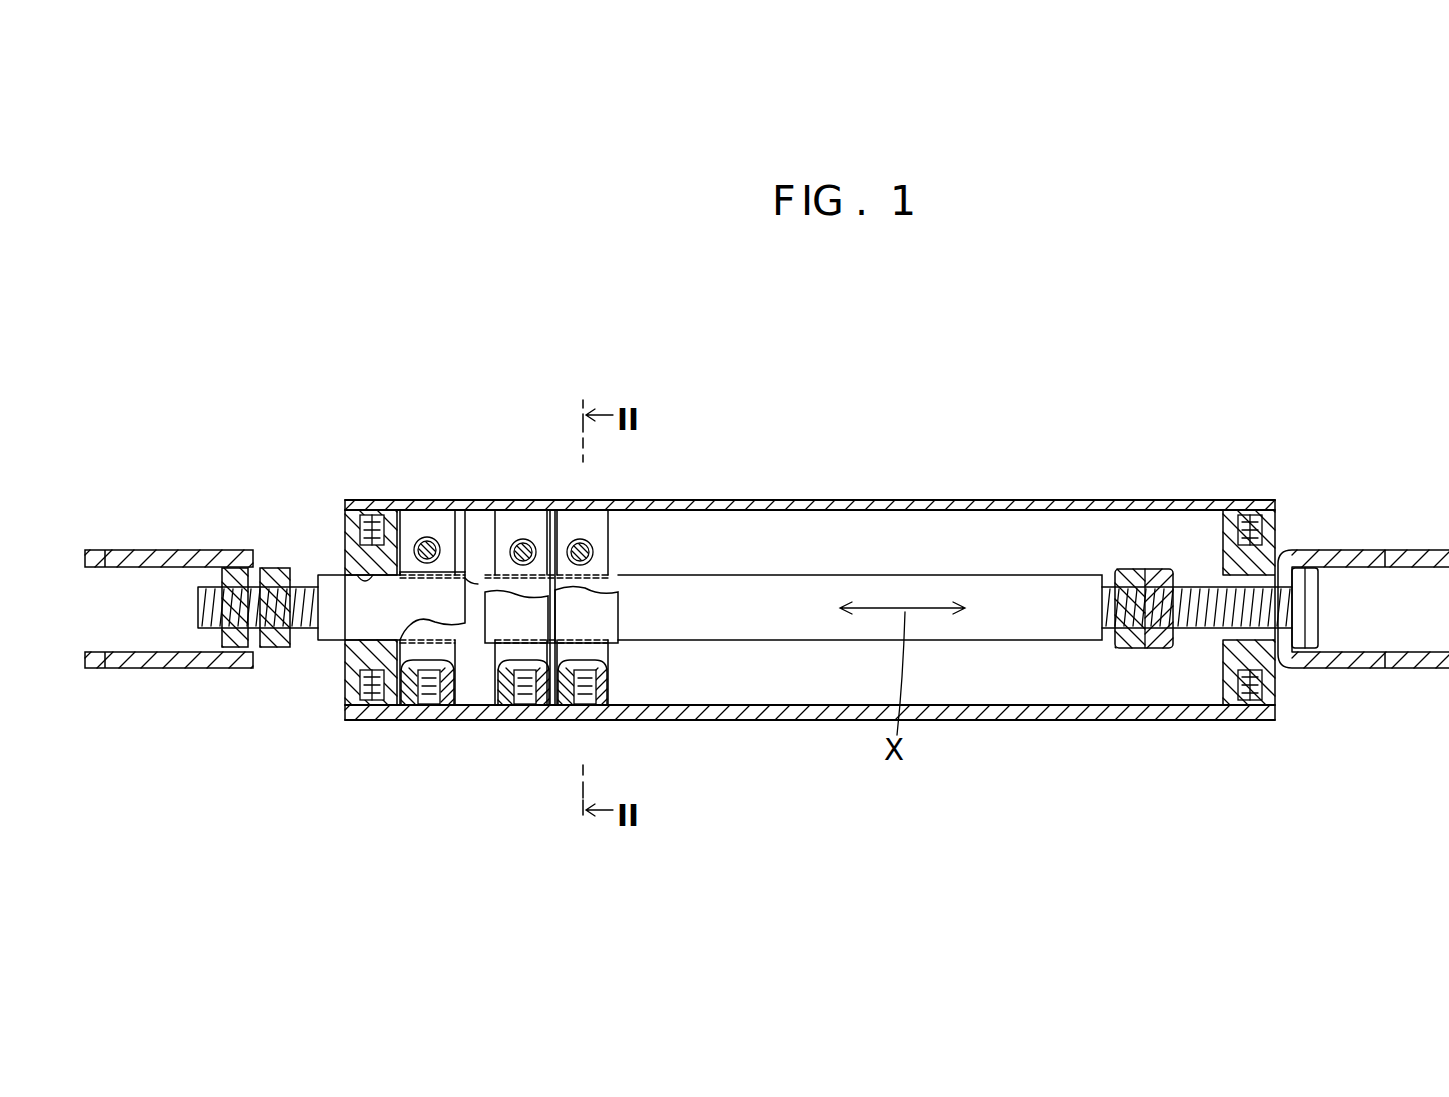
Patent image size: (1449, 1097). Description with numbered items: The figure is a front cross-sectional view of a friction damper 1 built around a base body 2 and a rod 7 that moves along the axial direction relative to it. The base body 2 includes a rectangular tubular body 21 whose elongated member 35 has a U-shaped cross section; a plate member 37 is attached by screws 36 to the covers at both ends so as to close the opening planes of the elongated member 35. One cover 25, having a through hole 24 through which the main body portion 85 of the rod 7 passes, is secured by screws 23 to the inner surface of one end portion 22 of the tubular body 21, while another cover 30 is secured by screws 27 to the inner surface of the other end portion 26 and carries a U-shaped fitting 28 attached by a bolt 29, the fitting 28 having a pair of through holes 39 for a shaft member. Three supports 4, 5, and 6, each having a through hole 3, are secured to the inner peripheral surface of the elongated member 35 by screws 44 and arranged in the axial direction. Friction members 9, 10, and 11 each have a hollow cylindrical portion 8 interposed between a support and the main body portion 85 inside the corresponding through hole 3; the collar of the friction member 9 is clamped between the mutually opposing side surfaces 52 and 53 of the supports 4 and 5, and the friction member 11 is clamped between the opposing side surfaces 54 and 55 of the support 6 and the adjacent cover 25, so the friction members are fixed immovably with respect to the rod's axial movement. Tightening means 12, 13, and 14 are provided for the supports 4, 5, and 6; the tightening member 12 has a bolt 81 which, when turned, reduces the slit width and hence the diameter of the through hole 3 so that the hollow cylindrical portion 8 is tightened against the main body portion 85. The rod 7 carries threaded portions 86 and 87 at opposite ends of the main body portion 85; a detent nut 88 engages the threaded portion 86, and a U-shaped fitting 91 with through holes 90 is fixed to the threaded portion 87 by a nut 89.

The friction damper 1 is at (1186, 444).
The base body 2 is at (802, 486).
The through hole 3 is at (545, 572).
The support 4 is at (565, 695).
The support 5 is at (535, 695).
The support 6 is at (412, 702).
The rod 7 is at (749, 558).
The hollow cylindrical portion 8 is at (497, 603).
The friction member 9 is at (634, 625).
The friction member 10 is at (487, 645).
The friction member 11 is at (446, 576).
The tightening means 12 is at (598, 532).
The tightening means 13 is at (519, 525).
The tightening means 14 is at (432, 526).
The rectangular tubular body 21 is at (804, 733).
The one end portion 22 is at (345, 714).
The screws 23 is at (370, 720).
The through hole 24 is at (357, 585).
The cover 25 is at (358, 665).
The other end portion 26 is at (1226, 704).
The screws 27 is at (1260, 704).
The U-shaped fitting 28 is at (1362, 552).
The bolt 29 is at (1310, 610).
The cover 30 is at (1265, 673).
The elongated member 35 is at (995, 720).
The screws 36 is at (372, 515).
The plate member 37 is at (905, 500).
The through holes 39 is at (1410, 555).
The screws 44 is at (590, 700).
The side surface 52 is at (550, 705).
The side surface 53 is at (553, 512).
The side surface 54 is at (386, 545).
The side surface 55 is at (403, 704).
The bolt 81 is at (558, 552).
The main body portion 85 is at (745, 620).
The threaded portion 86 is at (1143, 620).
The threaded portion 87 is at (262, 617).
The detent nut 88 is at (1158, 569).
The nut 89 is at (273, 568).
The through holes 90 is at (130, 556).
The U-shaped fitting 91 is at (175, 668).